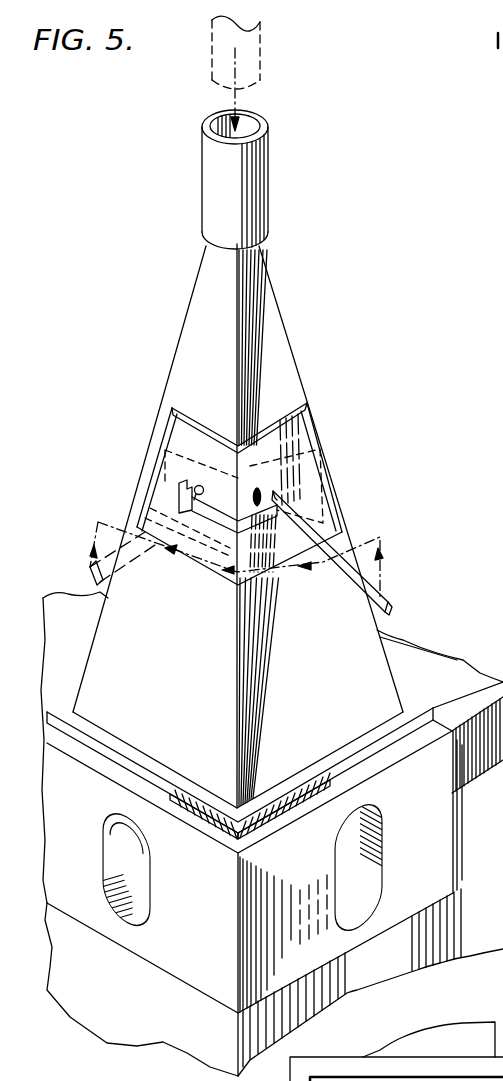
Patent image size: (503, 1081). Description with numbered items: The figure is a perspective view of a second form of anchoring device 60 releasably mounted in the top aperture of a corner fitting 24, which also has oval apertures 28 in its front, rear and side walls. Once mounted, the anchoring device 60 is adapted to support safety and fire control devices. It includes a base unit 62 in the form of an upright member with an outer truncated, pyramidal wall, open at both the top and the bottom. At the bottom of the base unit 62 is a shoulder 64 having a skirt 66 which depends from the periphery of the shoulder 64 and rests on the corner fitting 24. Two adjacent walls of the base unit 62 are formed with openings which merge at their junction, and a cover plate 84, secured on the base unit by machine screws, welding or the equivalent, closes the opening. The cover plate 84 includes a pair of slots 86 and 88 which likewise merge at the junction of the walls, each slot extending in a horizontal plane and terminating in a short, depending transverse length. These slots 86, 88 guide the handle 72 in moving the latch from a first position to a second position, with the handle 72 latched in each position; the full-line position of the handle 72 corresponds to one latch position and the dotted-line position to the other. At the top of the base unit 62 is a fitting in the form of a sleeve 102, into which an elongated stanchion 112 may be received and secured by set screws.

The stanchion 112 is at (247, 68).
The sleeve 102 is at (248, 190).
The base unit 62 is at (197, 358).
The cover plate 84 is at (295, 430).
The anchoring device 60 is at (348, 473).
The slot 88 is at (201, 486).
The slot 86 is at (257, 492).
The handle 72 is at (393, 607).
The shoulder 64 is at (410, 717).
The skirt 66 is at (418, 728).
The corner fitting 24 is at (212, 973).
The aperture 28 is at (137, 890).